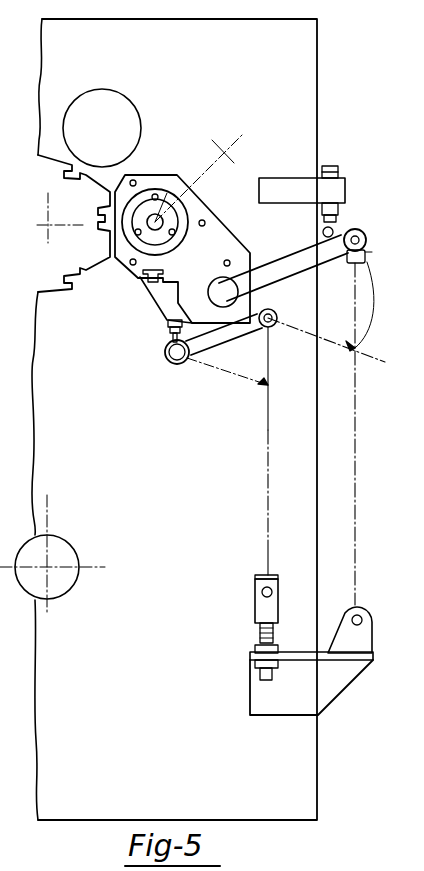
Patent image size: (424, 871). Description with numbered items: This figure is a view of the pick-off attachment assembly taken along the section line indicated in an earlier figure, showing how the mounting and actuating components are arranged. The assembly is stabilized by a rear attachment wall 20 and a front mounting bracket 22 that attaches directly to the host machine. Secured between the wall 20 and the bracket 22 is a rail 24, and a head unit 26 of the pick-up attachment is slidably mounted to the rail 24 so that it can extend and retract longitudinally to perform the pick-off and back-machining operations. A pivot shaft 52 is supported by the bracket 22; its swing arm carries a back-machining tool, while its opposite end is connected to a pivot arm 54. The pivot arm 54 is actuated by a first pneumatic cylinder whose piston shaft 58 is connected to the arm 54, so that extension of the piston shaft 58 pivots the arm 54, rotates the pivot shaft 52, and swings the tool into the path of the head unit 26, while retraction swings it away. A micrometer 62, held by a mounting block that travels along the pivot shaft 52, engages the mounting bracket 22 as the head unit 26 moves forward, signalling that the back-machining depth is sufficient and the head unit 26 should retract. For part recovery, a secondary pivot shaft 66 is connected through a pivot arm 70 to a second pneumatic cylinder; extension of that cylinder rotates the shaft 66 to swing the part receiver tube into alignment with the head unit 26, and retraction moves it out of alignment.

The rear attachment wall 20 is at (297, 60).
The head unit 26 is at (167, 193).
The pivot shaft 52 is at (268, 232).
The pivot arm 54 is at (336, 237).
The piston shaft 58 is at (367, 252).
The micrometer 62 is at (389, 433).
The front mounting bracket 22 is at (346, 345).
The pivot arm 70 is at (255, 332).
The secondary pivot shaft 66 is at (187, 358).
The rail 24 is at (337, 521).